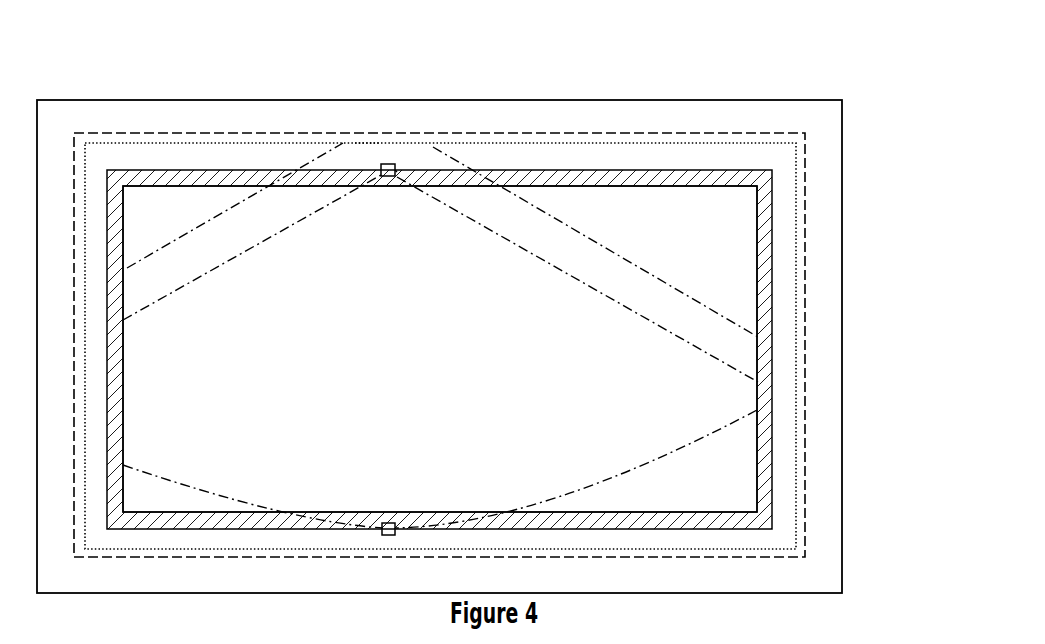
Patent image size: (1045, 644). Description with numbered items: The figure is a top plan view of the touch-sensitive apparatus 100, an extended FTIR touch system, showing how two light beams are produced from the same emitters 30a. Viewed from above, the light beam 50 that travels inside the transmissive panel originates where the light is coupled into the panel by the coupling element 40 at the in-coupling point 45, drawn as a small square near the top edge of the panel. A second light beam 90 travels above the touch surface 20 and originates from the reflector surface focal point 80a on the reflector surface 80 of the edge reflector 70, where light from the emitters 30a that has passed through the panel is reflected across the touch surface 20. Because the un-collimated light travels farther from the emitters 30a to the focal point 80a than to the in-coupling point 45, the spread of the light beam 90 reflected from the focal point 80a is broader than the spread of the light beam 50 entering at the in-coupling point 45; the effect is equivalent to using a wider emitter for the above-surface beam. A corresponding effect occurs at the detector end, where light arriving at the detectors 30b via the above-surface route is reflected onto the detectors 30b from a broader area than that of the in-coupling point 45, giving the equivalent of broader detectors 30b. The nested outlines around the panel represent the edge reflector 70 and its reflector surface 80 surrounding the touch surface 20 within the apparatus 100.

The touch-sensitive apparatus 100 is at (777, 92).
The edge reflector 70 is at (818, 148).
The reflector surface 80 is at (800, 265).
The reflector surface focal point 80a is at (368, 143).
The coupling element 40 is at (733, 172).
The touch surface 20 is at (637, 215).
The emitters 30a is at (390, 166).
The detectors 30b is at (393, 523).
The in-coupling point 45 is at (395, 170).
The light beam 90 is at (200, 222).
The light beam 50 is at (282, 228).